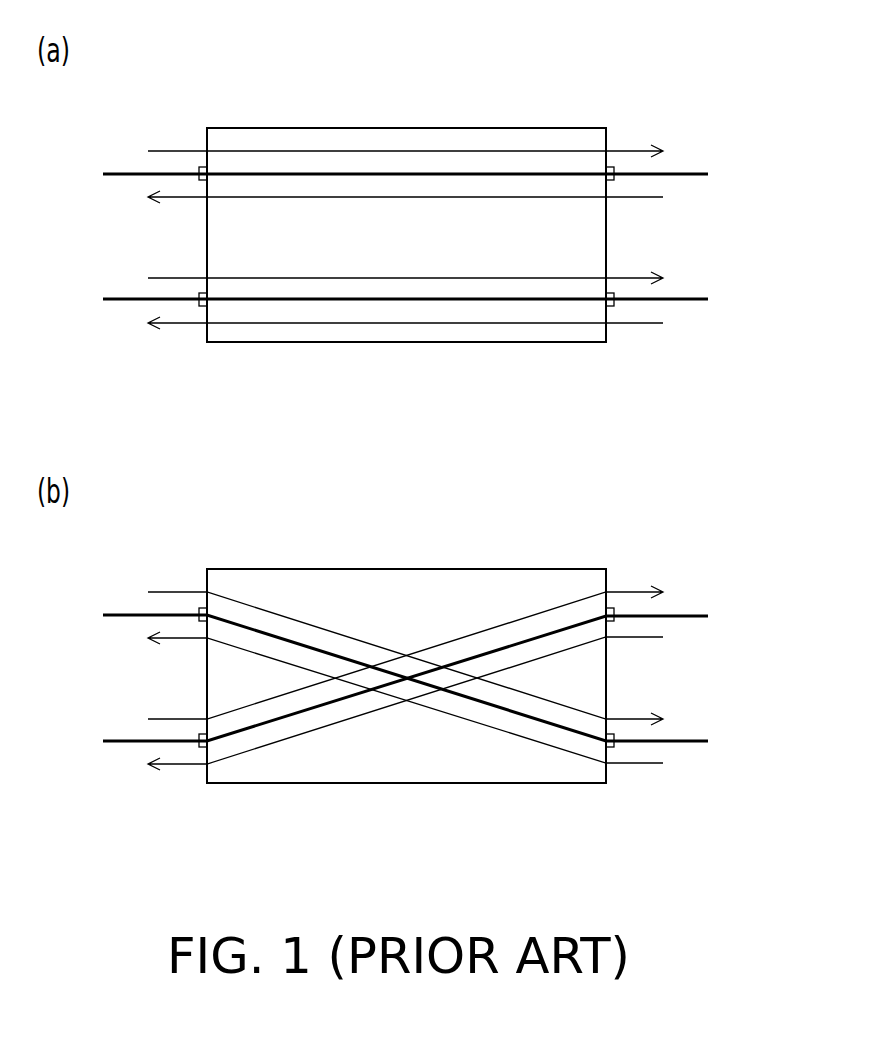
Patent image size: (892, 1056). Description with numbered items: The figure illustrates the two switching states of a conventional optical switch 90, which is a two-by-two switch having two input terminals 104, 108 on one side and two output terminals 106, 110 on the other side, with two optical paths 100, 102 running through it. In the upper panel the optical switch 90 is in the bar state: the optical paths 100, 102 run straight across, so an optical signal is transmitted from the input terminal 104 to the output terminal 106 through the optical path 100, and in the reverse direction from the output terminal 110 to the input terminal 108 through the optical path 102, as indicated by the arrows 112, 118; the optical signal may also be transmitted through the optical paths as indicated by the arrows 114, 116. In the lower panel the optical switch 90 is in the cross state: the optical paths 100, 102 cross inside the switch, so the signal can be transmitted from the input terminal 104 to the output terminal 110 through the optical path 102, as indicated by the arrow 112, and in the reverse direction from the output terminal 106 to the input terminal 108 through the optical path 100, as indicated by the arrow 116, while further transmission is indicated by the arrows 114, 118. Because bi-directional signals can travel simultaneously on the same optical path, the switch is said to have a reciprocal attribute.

The optical switch 90 is at (406, 128).
The optical path 100 is at (697, 174).
The optical path 102 is at (697, 299).
The input terminal 104 is at (203, 166).
The output terminal 106 is at (613, 167).
The input terminal 108 is at (199, 306).
The output terminal 110 is at (614, 306).
The arrow 112 is at (163, 150).
The arrow 114 is at (163, 277).
The arrow 116 is at (652, 197).
The arrow 118 is at (635, 323).